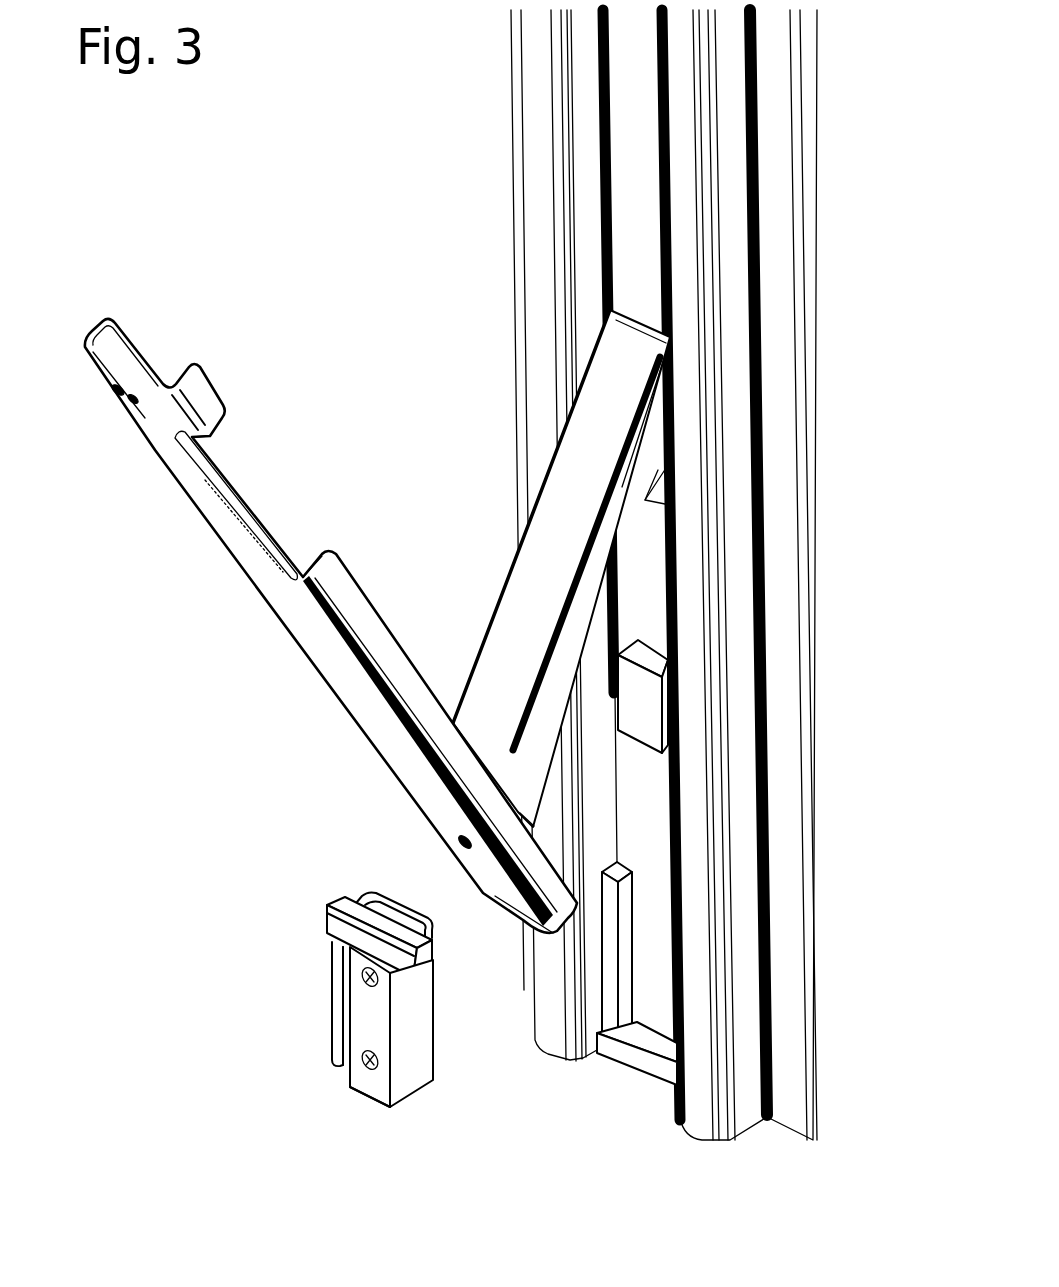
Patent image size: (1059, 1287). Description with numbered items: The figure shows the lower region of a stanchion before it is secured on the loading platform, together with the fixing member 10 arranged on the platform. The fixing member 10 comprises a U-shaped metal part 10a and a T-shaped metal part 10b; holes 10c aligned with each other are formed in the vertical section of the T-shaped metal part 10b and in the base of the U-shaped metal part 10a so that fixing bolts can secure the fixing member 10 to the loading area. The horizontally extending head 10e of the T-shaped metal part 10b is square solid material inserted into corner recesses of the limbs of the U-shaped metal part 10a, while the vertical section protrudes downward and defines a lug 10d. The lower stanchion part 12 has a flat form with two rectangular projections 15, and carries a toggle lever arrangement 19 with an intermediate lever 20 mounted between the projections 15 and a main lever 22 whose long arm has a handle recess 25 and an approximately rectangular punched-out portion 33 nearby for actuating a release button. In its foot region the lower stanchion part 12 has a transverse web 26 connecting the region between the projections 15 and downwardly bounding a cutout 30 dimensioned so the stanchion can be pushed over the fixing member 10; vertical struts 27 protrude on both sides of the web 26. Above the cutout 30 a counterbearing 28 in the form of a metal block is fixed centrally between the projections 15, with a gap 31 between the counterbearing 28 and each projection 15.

The lower stanchion part 12 is at (516, 575).
The rectangular projections 15 is at (680, 177).
The toggle lever arrangement 19 is at (355, 621).
The intermediate lever 20 is at (535, 582).
The main lever 22 is at (308, 626).
The handle recess 25 is at (218, 496).
The punched-out portion 33 is at (115, 393).
The gap 31 is at (744, 663).
The counterbearing 28 is at (640, 723).
The cutout 30 is at (664, 852).
The struts 27 is at (627, 963).
The transverse web 26 is at (640, 1068).
The fixing member 10 is at (328, 1000).
The U-shaped metal part 10a is at (415, 1072).
The T-shaped metal part 10b is at (357, 1083).
The holes 10c is at (365, 980).
The lug 10d is at (380, 1100).
The head 10e is at (352, 912).